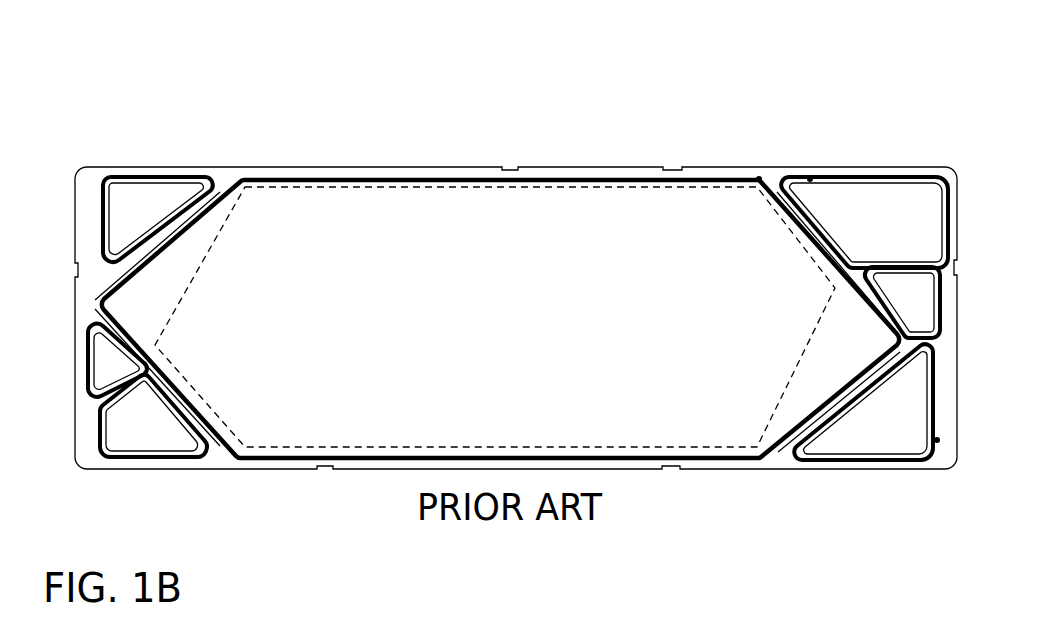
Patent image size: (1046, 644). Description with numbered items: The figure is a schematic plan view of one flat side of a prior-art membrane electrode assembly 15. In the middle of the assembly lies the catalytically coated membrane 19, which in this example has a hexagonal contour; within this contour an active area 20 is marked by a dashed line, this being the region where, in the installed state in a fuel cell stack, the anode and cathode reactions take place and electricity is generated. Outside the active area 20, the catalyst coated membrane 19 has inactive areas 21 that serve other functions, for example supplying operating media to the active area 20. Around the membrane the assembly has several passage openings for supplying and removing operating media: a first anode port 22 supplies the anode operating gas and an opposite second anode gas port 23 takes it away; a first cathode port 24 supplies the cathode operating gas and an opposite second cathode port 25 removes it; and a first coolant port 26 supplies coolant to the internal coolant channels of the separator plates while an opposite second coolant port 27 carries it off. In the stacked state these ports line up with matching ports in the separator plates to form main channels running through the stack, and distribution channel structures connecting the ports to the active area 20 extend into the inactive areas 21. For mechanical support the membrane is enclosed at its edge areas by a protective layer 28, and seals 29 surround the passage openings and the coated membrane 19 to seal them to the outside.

The membrane electrode assembly 15 is at (222, 122).
The catalytically coated membrane 19 is at (400, 211).
The active area 20 is at (508, 328).
The inactive areas 21 is at (169, 303).
The first anode port 22 is at (125, 375).
The second anode gas port 23 is at (925, 312).
The first cathode port 24 is at (147, 228).
The second cathode port 25 is at (885, 435).
The first coolant port 26 is at (155, 435).
The second coolant port 27 is at (885, 228).
The protective layer 28 is at (937, 442).
The seals 29 is at (810, 179).